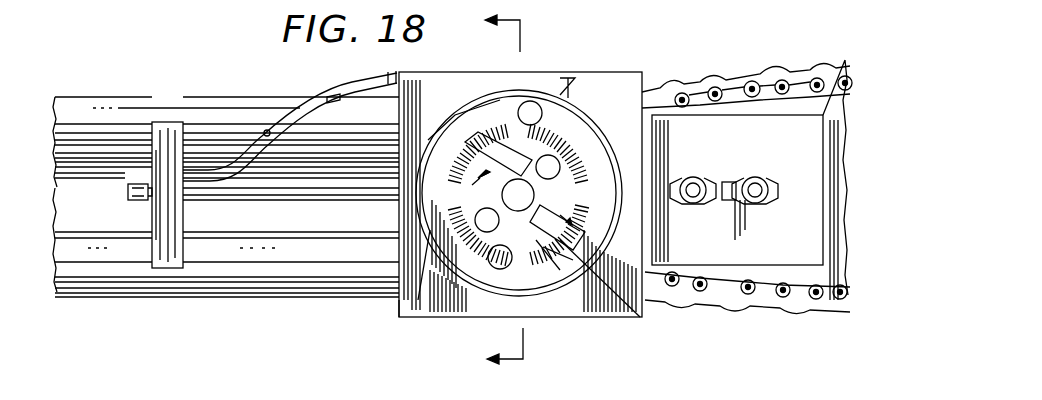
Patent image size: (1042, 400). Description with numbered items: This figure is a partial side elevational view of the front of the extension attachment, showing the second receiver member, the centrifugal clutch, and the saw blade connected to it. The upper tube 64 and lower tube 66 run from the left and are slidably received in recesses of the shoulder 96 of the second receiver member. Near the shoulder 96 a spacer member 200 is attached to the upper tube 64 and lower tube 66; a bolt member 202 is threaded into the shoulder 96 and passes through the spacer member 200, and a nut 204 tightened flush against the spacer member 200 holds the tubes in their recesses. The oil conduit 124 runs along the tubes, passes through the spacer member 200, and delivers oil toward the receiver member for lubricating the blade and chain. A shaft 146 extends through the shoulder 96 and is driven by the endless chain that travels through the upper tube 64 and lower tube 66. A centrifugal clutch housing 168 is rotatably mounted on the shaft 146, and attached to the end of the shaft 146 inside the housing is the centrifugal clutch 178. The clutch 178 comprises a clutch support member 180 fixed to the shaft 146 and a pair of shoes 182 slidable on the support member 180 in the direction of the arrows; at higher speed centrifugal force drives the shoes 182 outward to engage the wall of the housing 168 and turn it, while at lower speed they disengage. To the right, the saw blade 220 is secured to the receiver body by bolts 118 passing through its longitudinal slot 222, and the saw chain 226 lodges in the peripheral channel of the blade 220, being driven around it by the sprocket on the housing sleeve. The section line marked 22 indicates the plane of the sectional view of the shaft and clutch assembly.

The upper tube 64 is at (78, 112).
The lower tube 66 is at (100, 277).
The oil conduit 124 is at (237, 145).
The spacer member 200 is at (175, 262).
The bolt member 202 is at (318, 202).
The nut 204 is at (147, 206).
The shoulder 96 is at (428, 288).
The centrifugal clutch housing 168 is at (566, 74).
The shaft 146 is at (555, 186).
The shoes 182 is at (482, 120).
The centrifugal clutch 178 is at (456, 316).
The clutch support member 180 is at (597, 307).
The section line 22 is at (491, 192).
The saw chain 226 is at (753, 78).
The saw blade 220 is at (799, 190).
The bolts 118 is at (694, 188).
The longitudinal slot 222 is at (735, 168).